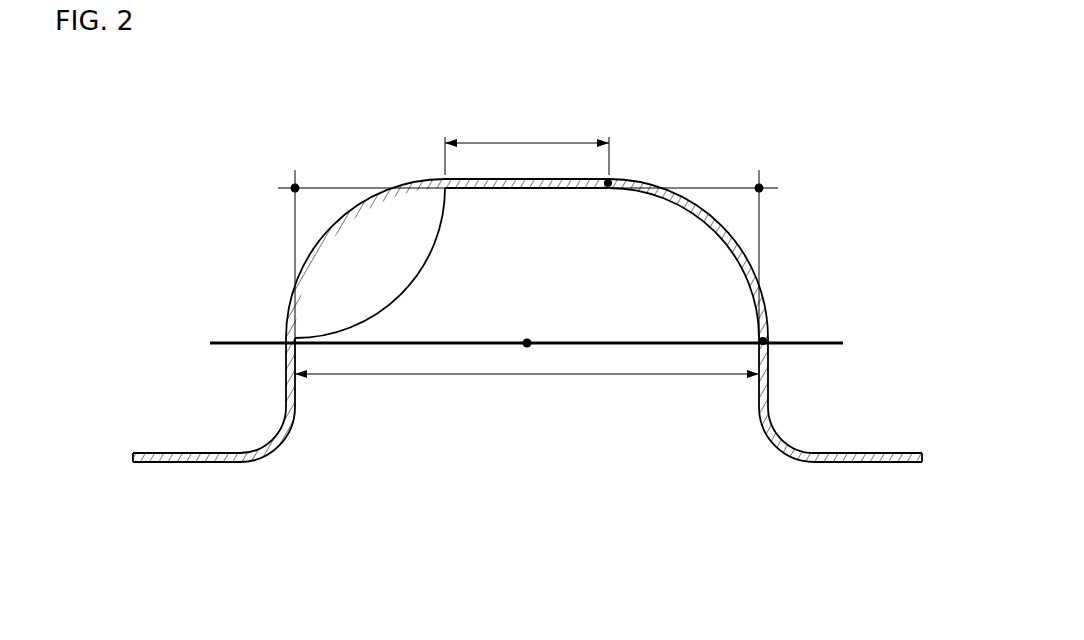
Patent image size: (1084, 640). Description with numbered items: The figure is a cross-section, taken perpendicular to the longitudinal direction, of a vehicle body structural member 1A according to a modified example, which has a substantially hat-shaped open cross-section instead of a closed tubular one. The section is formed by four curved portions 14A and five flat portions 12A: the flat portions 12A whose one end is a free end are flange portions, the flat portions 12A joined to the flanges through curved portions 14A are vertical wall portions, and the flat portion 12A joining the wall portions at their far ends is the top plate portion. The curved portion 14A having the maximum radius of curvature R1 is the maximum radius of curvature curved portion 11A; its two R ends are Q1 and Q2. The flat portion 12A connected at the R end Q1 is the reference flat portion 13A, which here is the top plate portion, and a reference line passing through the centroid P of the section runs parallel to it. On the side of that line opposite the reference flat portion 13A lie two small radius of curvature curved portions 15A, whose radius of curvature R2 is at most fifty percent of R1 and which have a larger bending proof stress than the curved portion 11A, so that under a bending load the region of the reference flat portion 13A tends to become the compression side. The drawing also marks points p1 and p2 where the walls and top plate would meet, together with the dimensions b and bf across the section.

The structural member 1A is at (172, 138).
The maximum radius of curvature curved portion 11A is at (735, 238).
The flat portion 12A is at (286, 334).
The reference flat portion 13A is at (530, 189).
The curved portion 14A is at (332, 226).
The small radius of curvature curved portion 15A is at (263, 448).
The centroid P is at (528, 343).
The intersection point p1 is at (295, 188).
The intersection point p2 is at (759, 188).
The R end Q1 is at (609, 183).
The R end Q2 is at (767, 341).
The radius of curvature R1 is at (712, 233).
The radius of curvature R2 is at (266, 430).
The width b is at (527, 391).
The flat top width bf is at (527, 143).